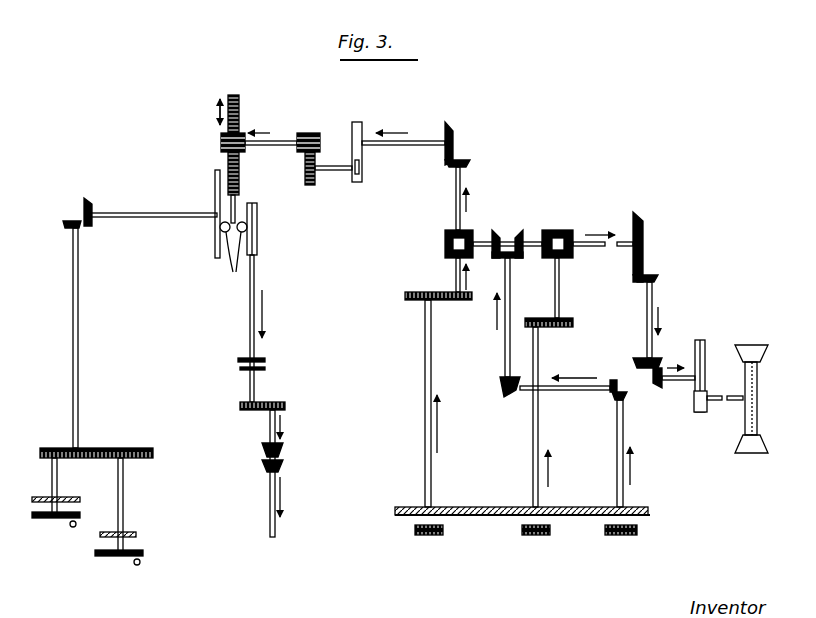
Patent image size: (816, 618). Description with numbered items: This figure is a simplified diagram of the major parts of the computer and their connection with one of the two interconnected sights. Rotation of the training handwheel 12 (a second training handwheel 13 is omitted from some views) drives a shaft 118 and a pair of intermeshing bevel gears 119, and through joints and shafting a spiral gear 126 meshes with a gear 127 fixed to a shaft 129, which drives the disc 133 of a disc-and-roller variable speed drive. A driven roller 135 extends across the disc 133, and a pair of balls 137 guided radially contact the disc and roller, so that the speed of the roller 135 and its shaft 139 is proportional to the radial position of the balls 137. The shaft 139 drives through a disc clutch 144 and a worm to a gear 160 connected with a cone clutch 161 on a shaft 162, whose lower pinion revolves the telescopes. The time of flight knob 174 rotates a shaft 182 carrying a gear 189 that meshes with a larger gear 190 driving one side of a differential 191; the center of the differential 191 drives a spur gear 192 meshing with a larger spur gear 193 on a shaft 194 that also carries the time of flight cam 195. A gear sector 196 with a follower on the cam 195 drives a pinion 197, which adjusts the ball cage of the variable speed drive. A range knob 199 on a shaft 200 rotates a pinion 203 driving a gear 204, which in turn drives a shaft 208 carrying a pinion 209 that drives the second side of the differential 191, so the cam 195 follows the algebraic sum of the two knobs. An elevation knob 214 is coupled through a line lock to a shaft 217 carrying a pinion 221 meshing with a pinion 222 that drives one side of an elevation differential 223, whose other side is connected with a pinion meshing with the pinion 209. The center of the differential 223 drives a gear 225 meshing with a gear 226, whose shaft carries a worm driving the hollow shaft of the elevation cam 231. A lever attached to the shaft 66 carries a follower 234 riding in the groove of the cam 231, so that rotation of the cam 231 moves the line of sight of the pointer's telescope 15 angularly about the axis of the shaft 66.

The training handwheel 12 is at (120, 557).
The training handwheel 13 is at (58, 519).
The pointer's telescope 15 is at (745, 348).
The shaft 66 is at (718, 405).
The shaft 118 is at (125, 503).
The bevel gears 119 is at (90, 445).
The spiral gear 126 is at (70, 226).
The gear 127 is at (93, 207).
The shaft 129 is at (168, 216).
The disc 133 is at (215, 258).
The driven roller 135 is at (258, 247).
The balls 137 is at (232, 261).
The shaft 139 is at (240, 133).
The disc clutch 144 is at (265, 360).
The gear 160 is at (285, 406).
The cone clutch 161 is at (284, 450).
The shaft 162 is at (270, 516).
The time of flight knob 174 is at (433, 536).
The shaft 182 is at (425, 380).
The gear 189 is at (418, 300).
The gear 190 is at (458, 300).
The differential 191 is at (444, 245).
The spur gear 192 is at (471, 164).
The spur gear 193 is at (457, 135).
The shaft 194 is at (418, 147).
The time of flight cam 195 is at (360, 136).
The gear sector 196 is at (310, 186).
The pinion 197 is at (318, 140).
The range knob 199 is at (624, 536).
The shaft 200 is at (623, 435).
The pinion 203 is at (615, 401).
The gear 204 is at (612, 384).
The shaft 208 is at (583, 392).
The pinion 209 is at (513, 259).
The elevation knob 214 is at (540, 536).
The shaft 217 is at (533, 466).
The pinion 221 is at (538, 328).
The pinion 222 is at (573, 322).
The elevation differential 223 is at (557, 228).
The gear 225 is at (643, 237).
The gear 226 is at (658, 280).
The elevation cam 231 is at (700, 340).
The follower 234 is at (694, 401).